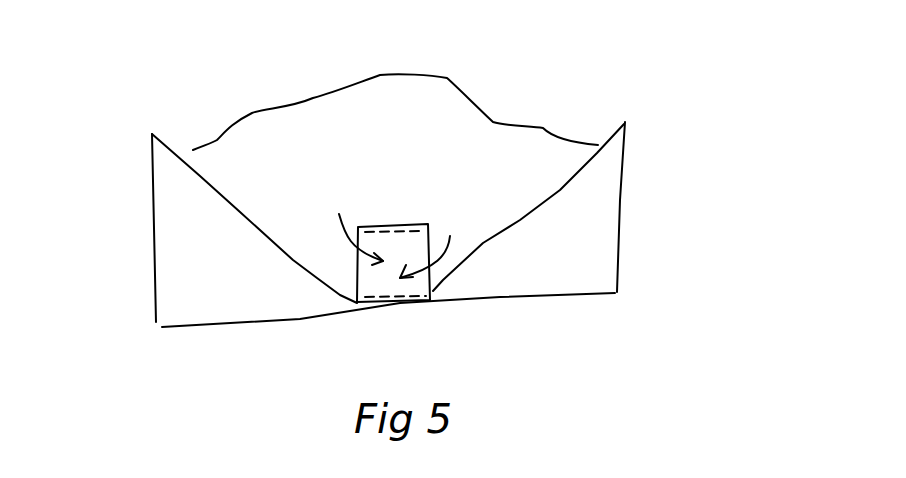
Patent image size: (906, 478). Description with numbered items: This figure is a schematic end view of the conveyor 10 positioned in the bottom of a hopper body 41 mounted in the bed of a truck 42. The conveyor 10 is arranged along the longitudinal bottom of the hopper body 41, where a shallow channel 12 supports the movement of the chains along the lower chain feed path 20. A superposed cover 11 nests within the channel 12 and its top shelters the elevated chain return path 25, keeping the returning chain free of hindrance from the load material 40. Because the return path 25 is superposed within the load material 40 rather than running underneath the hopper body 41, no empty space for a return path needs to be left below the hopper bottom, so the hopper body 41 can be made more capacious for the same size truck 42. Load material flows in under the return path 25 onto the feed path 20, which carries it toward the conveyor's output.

The load material 40 is at (383, 100).
The hopper body 41 is at (248, 218).
The truck 42 is at (230, 326).
The conveyor 10 is at (357, 277).
The cover 11 is at (379, 221).
The channel 12 is at (384, 301).
The chain return path 25 is at (397, 232).
The chain feed path 20 is at (405, 295).